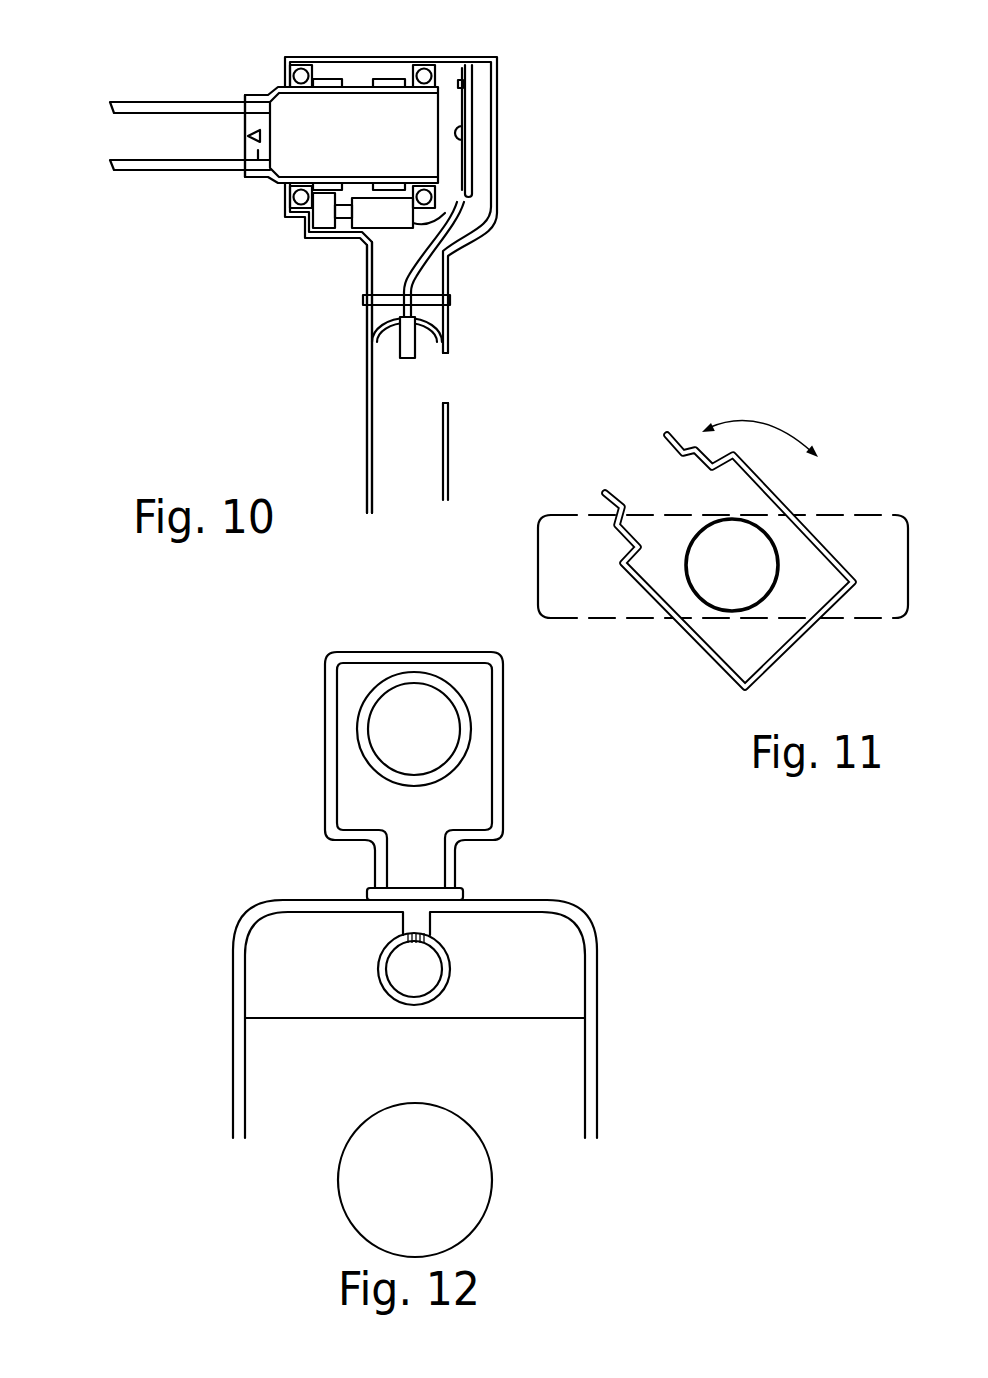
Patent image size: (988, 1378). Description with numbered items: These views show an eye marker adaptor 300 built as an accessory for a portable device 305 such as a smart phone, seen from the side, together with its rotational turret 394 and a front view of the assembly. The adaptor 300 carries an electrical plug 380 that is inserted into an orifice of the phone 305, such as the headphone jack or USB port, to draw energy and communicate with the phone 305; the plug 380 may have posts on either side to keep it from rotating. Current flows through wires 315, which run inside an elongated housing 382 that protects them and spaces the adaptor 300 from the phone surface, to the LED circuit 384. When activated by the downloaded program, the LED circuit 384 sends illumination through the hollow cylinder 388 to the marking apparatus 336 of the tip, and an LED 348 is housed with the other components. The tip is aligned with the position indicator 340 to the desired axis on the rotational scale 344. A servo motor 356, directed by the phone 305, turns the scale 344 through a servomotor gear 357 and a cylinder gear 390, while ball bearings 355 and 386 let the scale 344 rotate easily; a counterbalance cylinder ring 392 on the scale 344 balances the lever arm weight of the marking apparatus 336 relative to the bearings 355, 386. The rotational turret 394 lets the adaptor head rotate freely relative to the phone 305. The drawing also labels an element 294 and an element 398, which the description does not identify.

In FIG. 10, the arcuate wall 294 is at (363, 306).
In FIG. 10, the adaptor 300 is at (367, 389).
In FIG. 11, the adaptor 300 is at (848, 620).
In FIG. 12, the adaptor 300 is at (222, 928).
In FIG. 10, the portable device 305 is at (425, 445).
In FIG. 10, the wires 315 is at (418, 275).
In FIG. 10, the marking apparatus 336 is at (110, 107).
In FIG. 10, the position indicator 340 is at (248, 136).
In FIG. 10, the rotational scale 344 is at (236, 82).
In FIG. 10, the LED 348 is at (468, 133).
In FIG. 10, the ball bearing 355 is at (298, 64).
In FIG. 10, the servo motor 356 is at (366, 228).
In FIG. 10, the servomotor gear 357 is at (322, 219).
In FIG. 10, the electrical plug 380 is at (412, 340).
In FIG. 12, the electrical plug 380 is at (435, 934).
In FIG. 10, the elongated housing 382 is at (364, 280).
In FIG. 10, the LED circuit 384 is at (495, 170).
In FIG. 10, the ball bearing 386 is at (428, 63).
In FIG. 10, the hollow cylinder 388 is at (368, 102).
In FIG. 10, the cylinder gear 390 is at (327, 188).
In FIG. 10, the counterbalance cylinder ring 392 is at (388, 76).
In FIG. 11, the rotational turret 394 is at (693, 597).
In FIG. 12, the rotational turret 394 is at (368, 892).
In FIG. 12, the frame 398 is at (458, 863).